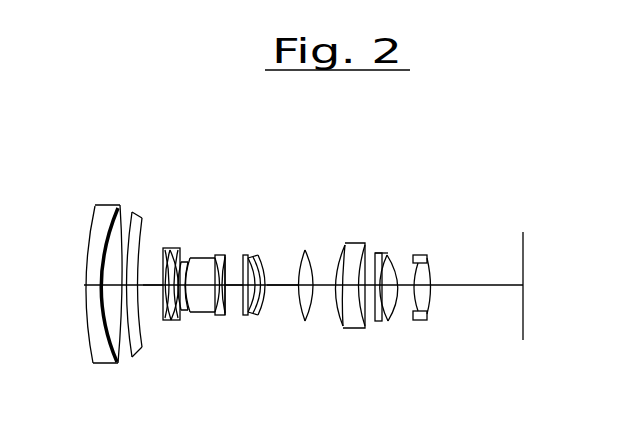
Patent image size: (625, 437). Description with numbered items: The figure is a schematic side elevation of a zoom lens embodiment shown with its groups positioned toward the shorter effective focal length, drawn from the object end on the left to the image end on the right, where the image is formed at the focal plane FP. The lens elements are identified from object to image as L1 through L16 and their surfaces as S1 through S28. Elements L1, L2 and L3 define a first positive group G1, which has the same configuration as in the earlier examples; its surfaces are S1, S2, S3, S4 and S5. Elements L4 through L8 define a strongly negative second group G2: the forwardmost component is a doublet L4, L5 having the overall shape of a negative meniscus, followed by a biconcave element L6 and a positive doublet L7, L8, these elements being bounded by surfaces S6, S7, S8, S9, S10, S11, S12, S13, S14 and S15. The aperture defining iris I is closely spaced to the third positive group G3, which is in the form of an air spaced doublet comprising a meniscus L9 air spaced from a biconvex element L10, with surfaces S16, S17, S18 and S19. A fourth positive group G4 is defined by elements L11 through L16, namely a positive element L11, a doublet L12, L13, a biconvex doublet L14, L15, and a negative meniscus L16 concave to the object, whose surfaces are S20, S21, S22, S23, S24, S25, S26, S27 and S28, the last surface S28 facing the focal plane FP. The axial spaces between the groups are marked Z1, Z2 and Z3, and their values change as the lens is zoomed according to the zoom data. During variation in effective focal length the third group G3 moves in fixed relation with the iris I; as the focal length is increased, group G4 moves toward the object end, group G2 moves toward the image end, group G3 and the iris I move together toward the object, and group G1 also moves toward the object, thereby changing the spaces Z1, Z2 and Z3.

The first positive group G1 is at (143, 120).
The second negative group G2 is at (227, 133).
The third positive group G3 is at (263, 150).
The fourth positive group G4 is at (435, 160).
The lens element L1 is at (81, 267).
The lens element L2 is at (82, 274).
The lens element L3 is at (107, 293).
The lens element L4 is at (154, 301).
The lens element L5 is at (173, 285).
The biconcave element L6 is at (186, 315).
The lens element L7 is at (214, 282).
The lens element L8 is at (234, 322).
The meniscus L9 is at (260, 294).
The biconvex element L10 is at (291, 316).
The positive element L11 is at (329, 302).
The lens element L12 is at (341, 297).
The lens element L13 is at (380, 301).
The lens element L14 is at (390, 288).
The lens element L15 is at (424, 286).
The negative meniscus L16 is at (453, 285).
The lens element surface S1 is at (86, 310).
The lens element surface S2 is at (100, 328).
The lens element surface S3 is at (112, 348).
The lens element surface S4 is at (125, 357).
The lens element surface S5 is at (136, 345).
The lens element surface S6 is at (141, 352).
The lens element surface S7 is at (165, 315).
The lens element surface S8 is at (170, 322).
The lens element surface S9 is at (175, 321).
The lens element surface S10 is at (181, 320).
The lens element surface S11 is at (190, 312).
The lens element surface S12 is at (200, 314).
The lens element surface S13 is at (218, 318).
The lens element surface S14 is at (224, 320).
The lens element surface S15 is at (244, 316).
The lens element surface S16 is at (255, 320).
The lens element surface S17 is at (262, 320).
The lens element surface S18 is at (268, 322).
The lens element surface S19 is at (303, 321).
The lens element surface S20 is at (313, 322).
The lens element surface S21 is at (337, 326).
The lens element surface S22 is at (345, 328).
The lens element surface S23 is at (366, 328).
The lens element surface S24 is at (382, 322).
The lens element surface S25 is at (392, 321).
The lens element surface S26 is at (403, 312).
The lens element surface S27 is at (425, 310).
The lens element surface S28 is at (431, 298).
The axial space Z1 is at (153, 273).
The axial space Z2 is at (235, 275).
The axial space Z3 is at (282, 275).
The aperture defining iris I is at (244, 253).
The focal plane FP is at (523, 255).